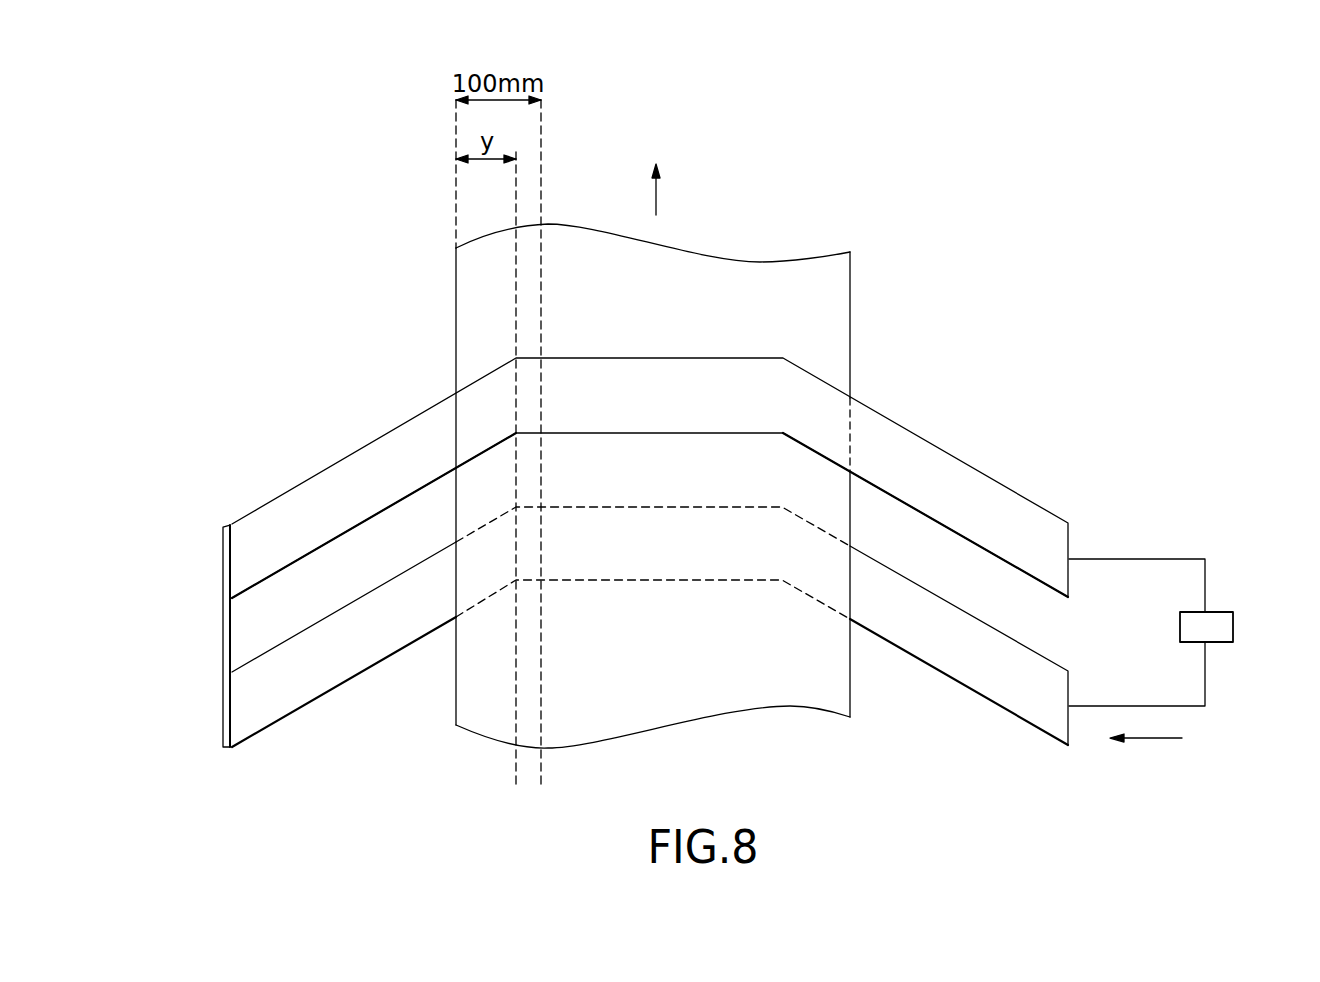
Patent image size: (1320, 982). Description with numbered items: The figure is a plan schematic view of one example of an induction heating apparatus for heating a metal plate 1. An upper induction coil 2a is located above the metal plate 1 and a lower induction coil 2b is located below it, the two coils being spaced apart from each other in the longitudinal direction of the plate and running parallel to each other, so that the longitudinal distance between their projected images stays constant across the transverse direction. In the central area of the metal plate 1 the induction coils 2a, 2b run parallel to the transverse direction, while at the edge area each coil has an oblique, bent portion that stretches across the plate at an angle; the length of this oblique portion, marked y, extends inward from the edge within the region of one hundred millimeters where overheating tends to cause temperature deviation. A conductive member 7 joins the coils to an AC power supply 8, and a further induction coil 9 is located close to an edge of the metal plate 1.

The metal plate 1 is at (753, 273).
The upper induction coil 2a is at (653, 385).
The lower induction coil 2b is at (655, 557).
The conductive member 7 is at (1138, 559).
The AC power supply 8 is at (1233, 625).
The induction coil located close to an edge of the metal plate 9 is at (222, 622).